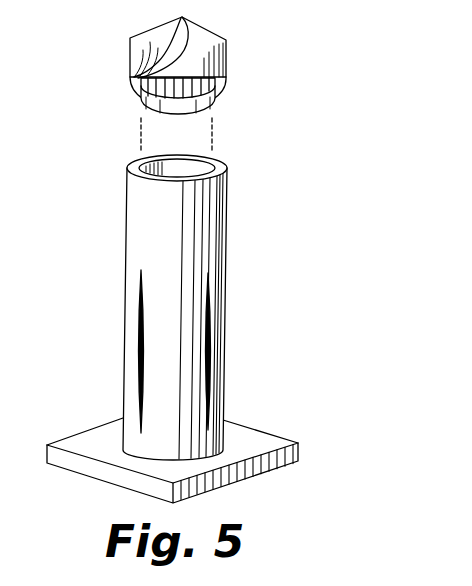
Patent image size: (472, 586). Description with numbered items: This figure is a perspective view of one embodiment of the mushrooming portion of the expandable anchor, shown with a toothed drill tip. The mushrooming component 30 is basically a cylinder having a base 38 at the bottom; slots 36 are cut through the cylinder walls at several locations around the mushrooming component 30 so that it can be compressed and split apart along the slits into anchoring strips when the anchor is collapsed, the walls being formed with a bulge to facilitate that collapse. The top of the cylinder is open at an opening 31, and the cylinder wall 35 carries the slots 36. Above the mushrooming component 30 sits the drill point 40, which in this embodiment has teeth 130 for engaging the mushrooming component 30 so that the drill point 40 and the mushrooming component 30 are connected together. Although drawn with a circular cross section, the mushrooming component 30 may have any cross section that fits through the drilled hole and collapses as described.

The mushrooming component 30 is at (173, 260).
The tube opening 31 is at (182, 157).
The tubular post 35 is at (130, 357).
The slots 36 is at (140, 312).
The base 38 is at (112, 418).
The drill point 40 is at (228, 60).
The teeth 130 is at (142, 104).